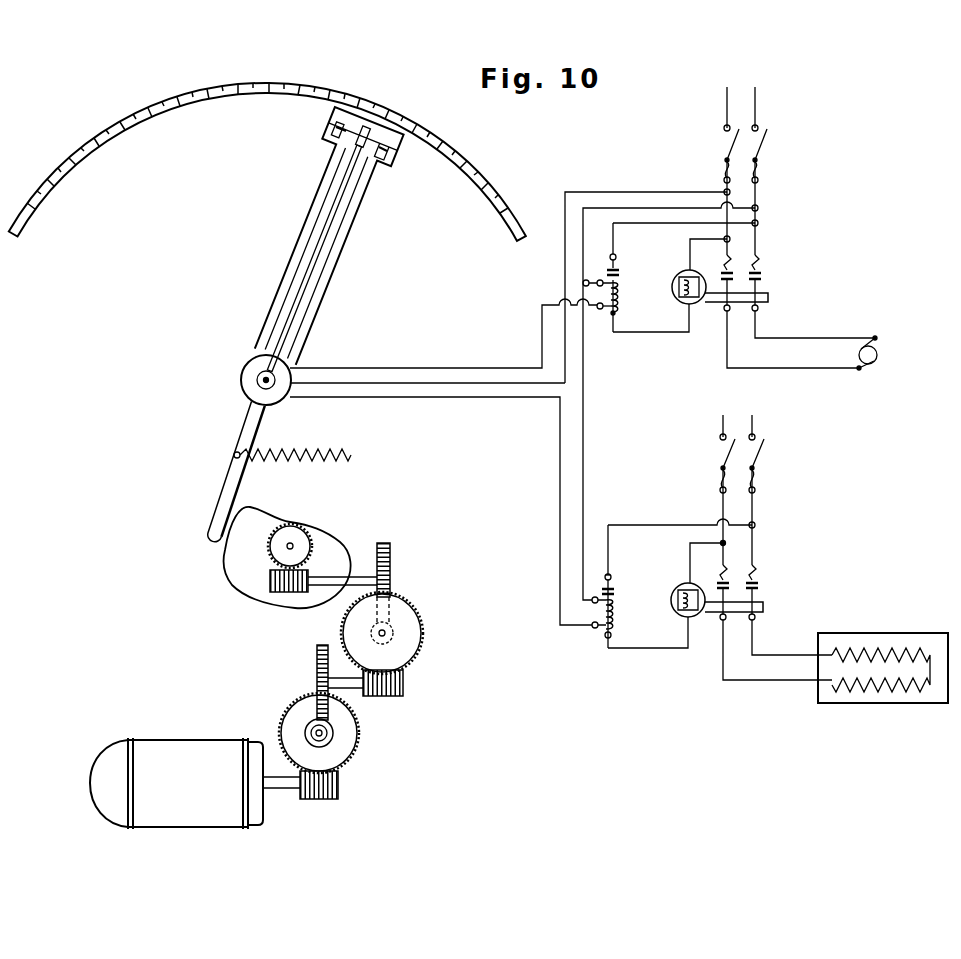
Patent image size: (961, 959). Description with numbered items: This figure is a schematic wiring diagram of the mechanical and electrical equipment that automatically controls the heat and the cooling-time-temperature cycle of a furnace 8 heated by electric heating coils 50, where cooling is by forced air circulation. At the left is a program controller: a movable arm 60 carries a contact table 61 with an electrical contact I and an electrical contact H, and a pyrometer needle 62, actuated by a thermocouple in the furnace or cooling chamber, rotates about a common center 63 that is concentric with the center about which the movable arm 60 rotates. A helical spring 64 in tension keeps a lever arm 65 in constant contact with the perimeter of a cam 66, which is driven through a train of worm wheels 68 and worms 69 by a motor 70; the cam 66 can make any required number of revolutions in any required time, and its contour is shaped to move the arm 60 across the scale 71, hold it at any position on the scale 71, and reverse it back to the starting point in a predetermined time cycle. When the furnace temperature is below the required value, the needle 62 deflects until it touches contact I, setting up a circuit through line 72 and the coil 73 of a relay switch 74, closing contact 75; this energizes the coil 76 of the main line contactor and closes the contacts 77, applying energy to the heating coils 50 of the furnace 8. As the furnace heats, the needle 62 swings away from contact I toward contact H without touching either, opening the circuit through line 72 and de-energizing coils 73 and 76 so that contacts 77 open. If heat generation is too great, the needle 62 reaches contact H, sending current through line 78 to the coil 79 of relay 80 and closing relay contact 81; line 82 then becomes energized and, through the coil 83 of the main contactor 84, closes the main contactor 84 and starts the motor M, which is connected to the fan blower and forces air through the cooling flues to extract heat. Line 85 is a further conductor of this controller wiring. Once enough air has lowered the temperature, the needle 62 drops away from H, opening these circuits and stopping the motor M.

The scale 71 is at (330, 110).
The electrical contact I is at (333, 128).
The electrical contact H is at (380, 166).
The contact table 61 is at (395, 150).
The movable arm 60 is at (323, 301).
The pyrometer needle 62 is at (286, 332).
The common center 63 is at (258, 385).
The helical spring 64 is at (316, 452).
The lever arm 65 is at (224, 480).
The cam 66 is at (241, 563).
The worm wheels 68 is at (297, 540).
The worms 69 is at (278, 592).
The motor 70 is at (180, 752).
The line 72 is at (455, 398).
The line 78 is at (445, 368).
The line 85 is at (505, 381).
The line 82 is at (684, 224).
The relay contact 81 is at (615, 268).
The relay 80 is at (616, 283).
The coil 79 is at (617, 301).
The coil of main contactor 83 is at (686, 300).
The main contactor 84 is at (762, 276).
The motor M is at (879, 354).
The contact 75 is at (606, 587).
The relay switch 74 is at (616, 590).
The coil 73 is at (614, 619).
The contacts 77 is at (742, 583).
The coil of main line contactor 76 is at (684, 614).
The furnace 8 is at (883, 679).
The electric heating coils 50 is at (882, 688).